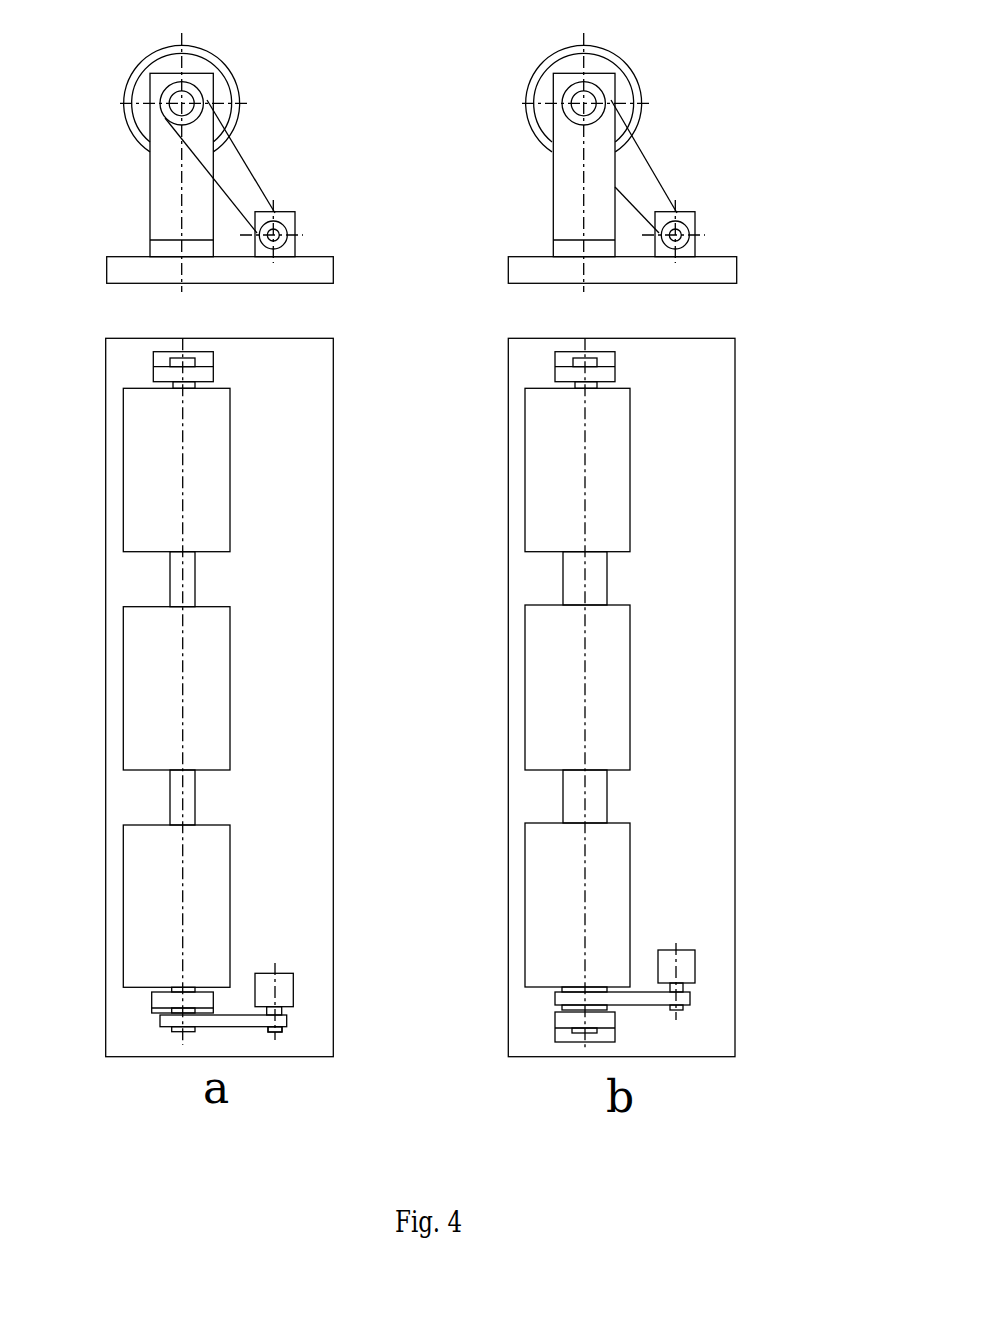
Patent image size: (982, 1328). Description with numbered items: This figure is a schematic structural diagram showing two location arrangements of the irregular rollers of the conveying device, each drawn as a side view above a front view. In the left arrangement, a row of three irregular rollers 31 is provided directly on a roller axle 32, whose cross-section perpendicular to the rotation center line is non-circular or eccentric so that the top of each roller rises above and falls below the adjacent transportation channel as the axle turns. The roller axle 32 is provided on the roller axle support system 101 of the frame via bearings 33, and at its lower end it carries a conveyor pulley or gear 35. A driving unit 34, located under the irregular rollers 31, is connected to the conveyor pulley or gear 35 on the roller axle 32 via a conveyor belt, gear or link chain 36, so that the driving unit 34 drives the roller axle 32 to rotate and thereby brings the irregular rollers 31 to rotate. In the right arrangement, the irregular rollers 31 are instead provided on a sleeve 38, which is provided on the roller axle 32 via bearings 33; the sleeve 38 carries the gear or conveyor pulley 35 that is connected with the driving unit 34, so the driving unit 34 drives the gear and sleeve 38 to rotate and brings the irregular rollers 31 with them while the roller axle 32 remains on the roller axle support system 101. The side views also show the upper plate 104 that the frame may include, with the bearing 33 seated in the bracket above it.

The irregular roller 31 is at (405, 687).
The roller axle 32 is at (331, 384).
The bearing 33 is at (602, 81).
The driving unit 34 is at (494, 946).
The conveyor pulley or gear 35 is at (371, 979).
The conveyor belt, gear or link chain 36 is at (526, 996).
The sleeve 38 is at (625, 675).
The roller axle support system 101 is at (678, 1031).
The upper plate 104 is at (665, 237).